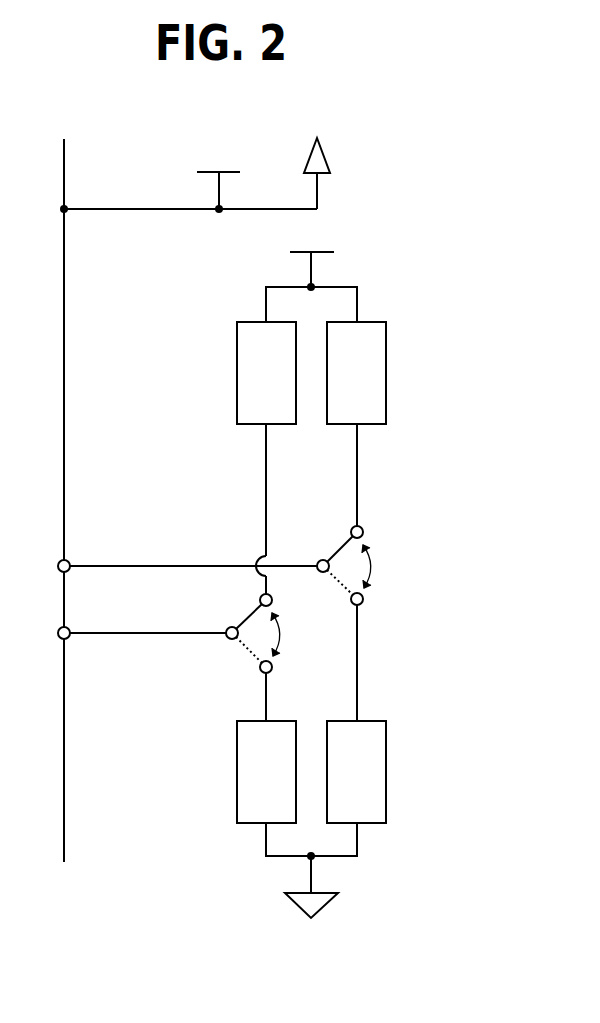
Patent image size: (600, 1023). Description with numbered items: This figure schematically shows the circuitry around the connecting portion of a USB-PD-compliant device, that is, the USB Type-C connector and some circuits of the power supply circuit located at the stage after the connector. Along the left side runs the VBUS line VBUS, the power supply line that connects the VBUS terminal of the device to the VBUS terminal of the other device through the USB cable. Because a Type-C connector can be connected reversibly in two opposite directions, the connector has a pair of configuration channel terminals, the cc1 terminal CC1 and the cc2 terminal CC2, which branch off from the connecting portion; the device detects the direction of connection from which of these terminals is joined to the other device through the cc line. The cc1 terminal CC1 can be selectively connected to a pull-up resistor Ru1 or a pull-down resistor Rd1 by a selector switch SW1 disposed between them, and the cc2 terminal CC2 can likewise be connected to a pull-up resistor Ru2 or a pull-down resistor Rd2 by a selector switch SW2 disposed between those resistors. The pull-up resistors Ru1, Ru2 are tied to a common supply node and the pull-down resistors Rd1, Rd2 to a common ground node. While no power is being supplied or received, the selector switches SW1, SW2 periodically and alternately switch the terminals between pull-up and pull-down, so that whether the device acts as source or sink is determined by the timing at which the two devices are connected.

The VBUS line VBUS is at (195, 500).
The pull-up resistor Ru1 is at (356, 424).
The pull-up resistor Ru2 is at (266, 439).
The pull-down resistor Rd1 is at (348, 788).
The pull-down resistor Rd2 is at (274, 788).
The selector switch SW1 is at (382, 560).
The selector switch SW2 is at (232, 665).
The cc1 terminal CC1 is at (67, 563).
The cc2 terminal CC2 is at (67, 630).